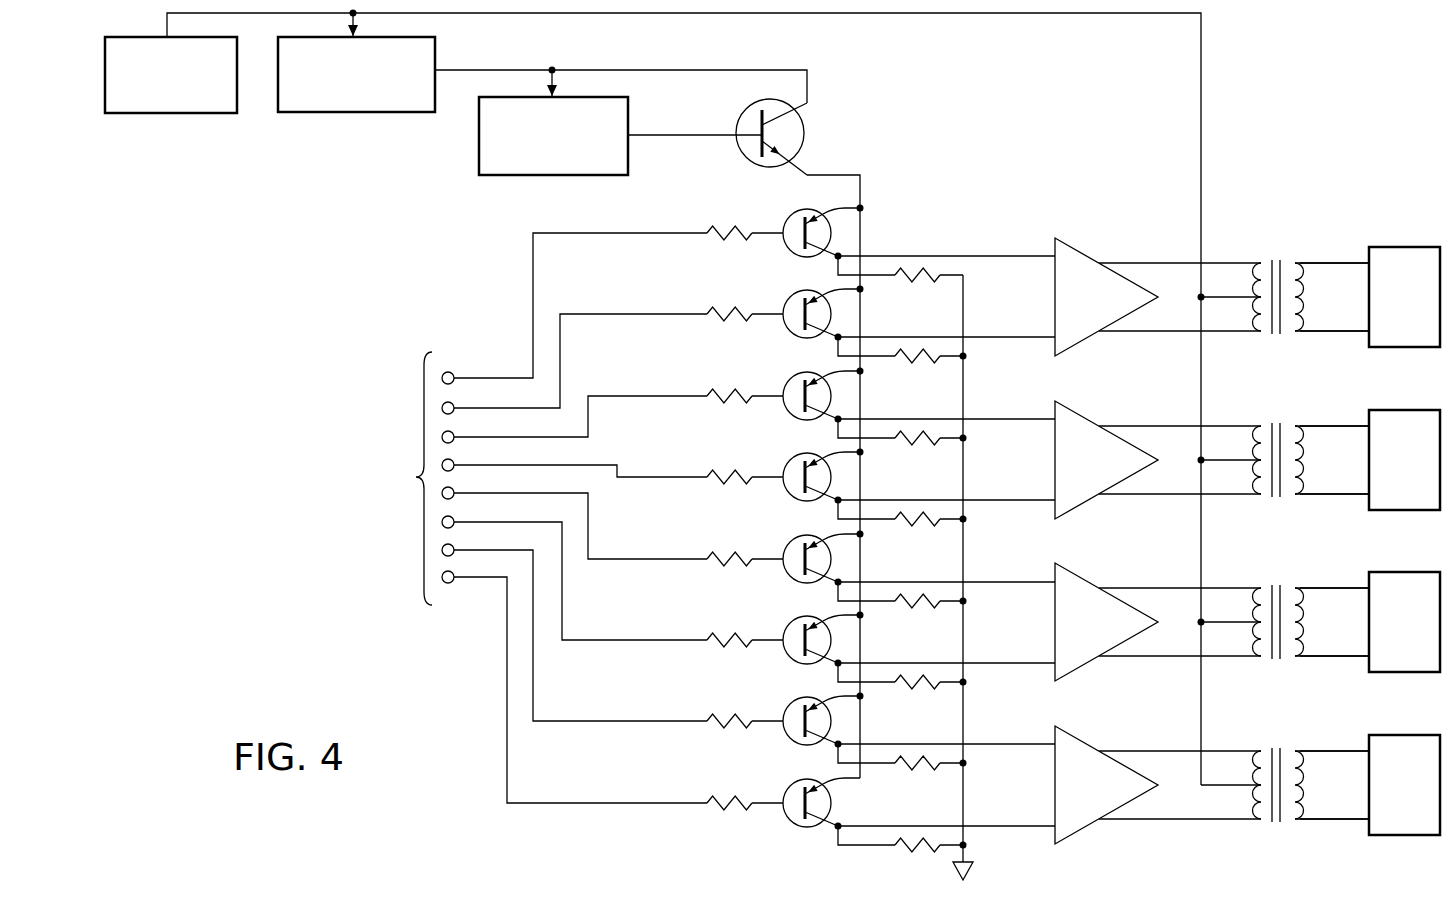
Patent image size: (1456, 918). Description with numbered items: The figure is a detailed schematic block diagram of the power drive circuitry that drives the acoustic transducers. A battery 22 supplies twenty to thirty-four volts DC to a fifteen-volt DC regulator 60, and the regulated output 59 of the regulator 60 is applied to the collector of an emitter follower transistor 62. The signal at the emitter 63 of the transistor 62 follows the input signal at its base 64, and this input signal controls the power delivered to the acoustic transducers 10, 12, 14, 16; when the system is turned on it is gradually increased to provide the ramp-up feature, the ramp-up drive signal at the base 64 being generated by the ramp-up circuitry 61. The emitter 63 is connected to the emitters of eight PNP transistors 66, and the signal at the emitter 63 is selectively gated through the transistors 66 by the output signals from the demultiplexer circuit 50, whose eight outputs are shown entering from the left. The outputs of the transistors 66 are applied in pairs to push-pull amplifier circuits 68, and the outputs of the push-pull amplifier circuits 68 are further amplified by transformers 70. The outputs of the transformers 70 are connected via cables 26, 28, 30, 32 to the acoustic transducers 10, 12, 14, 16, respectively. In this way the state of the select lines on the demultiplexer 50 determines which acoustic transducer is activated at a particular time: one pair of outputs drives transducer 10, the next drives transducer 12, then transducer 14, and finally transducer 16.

The acoustic transducer 10 is at (1391, 310).
The acoustic transducer 12 is at (1391, 473).
The acoustic transducer 14 is at (1391, 635).
The acoustic transducer 16 is at (1391, 798).
The battery 22 is at (192, 113).
The cable 26 is at (1322, 263).
The cable 28 is at (1322, 426).
The cable 30 is at (1322, 588).
The cable 32 is at (1322, 751).
The demultiplexer circuit 50 is at (347, 478).
The +15 VDC regulated output 59 is at (630, 70).
The +15 VDC regulator 60 is at (352, 112).
The ramp-up circuitry 61 is at (508, 178).
The emitter follower transistor 62 is at (798, 113).
The emitter 63 is at (838, 174).
The base 64 is at (667, 135).
The PNP transistors 66 is at (790, 217).
The push-pull amplifier circuit 68 is at (1074, 310).
The transformer 70 is at (1264, 247).